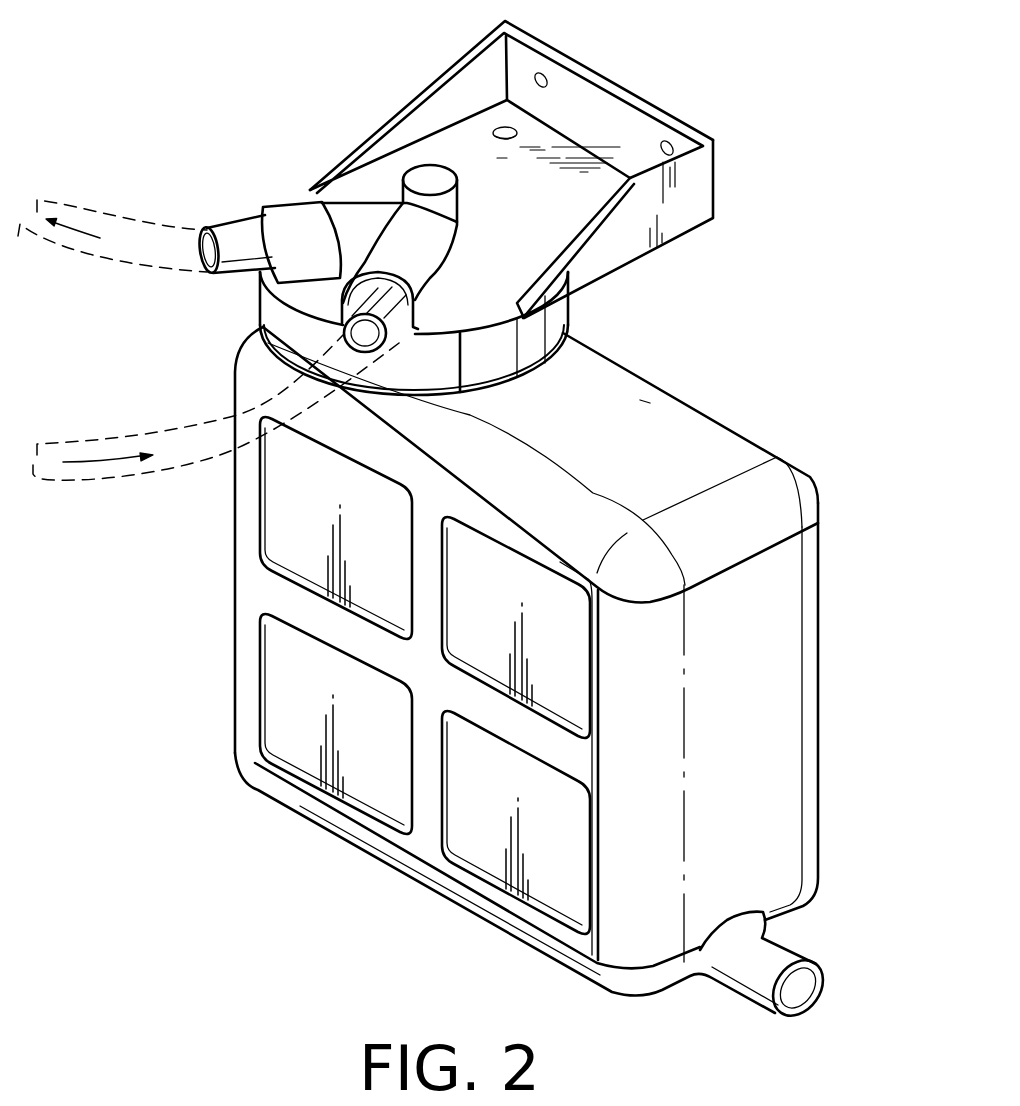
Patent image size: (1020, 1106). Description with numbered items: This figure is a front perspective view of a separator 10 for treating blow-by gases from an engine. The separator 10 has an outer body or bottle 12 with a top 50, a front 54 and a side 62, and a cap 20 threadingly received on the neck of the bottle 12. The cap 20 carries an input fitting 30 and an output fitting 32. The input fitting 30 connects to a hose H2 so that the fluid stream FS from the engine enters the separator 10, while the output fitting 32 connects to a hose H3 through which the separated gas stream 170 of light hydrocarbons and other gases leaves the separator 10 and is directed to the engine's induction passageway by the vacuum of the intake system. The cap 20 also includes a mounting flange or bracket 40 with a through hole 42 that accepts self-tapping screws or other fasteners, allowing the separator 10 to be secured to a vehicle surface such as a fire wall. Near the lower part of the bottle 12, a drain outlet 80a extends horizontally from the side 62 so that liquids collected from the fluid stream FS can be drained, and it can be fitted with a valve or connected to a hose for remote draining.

The separator 10 is at (727, 327).
The outer body or bottle 12 is at (818, 470).
The cap 20 is at (666, 54).
The input fitting 30 is at (398, 325).
The output fitting 32 is at (247, 237).
The mounting flange or bracket 40 is at (545, 73).
The through hole 42 is at (668, 143).
The top 50 is at (676, 442).
The front 54 is at (288, 757).
The side 62 is at (797, 705).
The drain outlet 80a is at (783, 962).
The gas stream 170 is at (77, 233).
The hose H3 is at (120, 227).
The hose H2 is at (63, 481).
The fluid stream FS is at (98, 462).